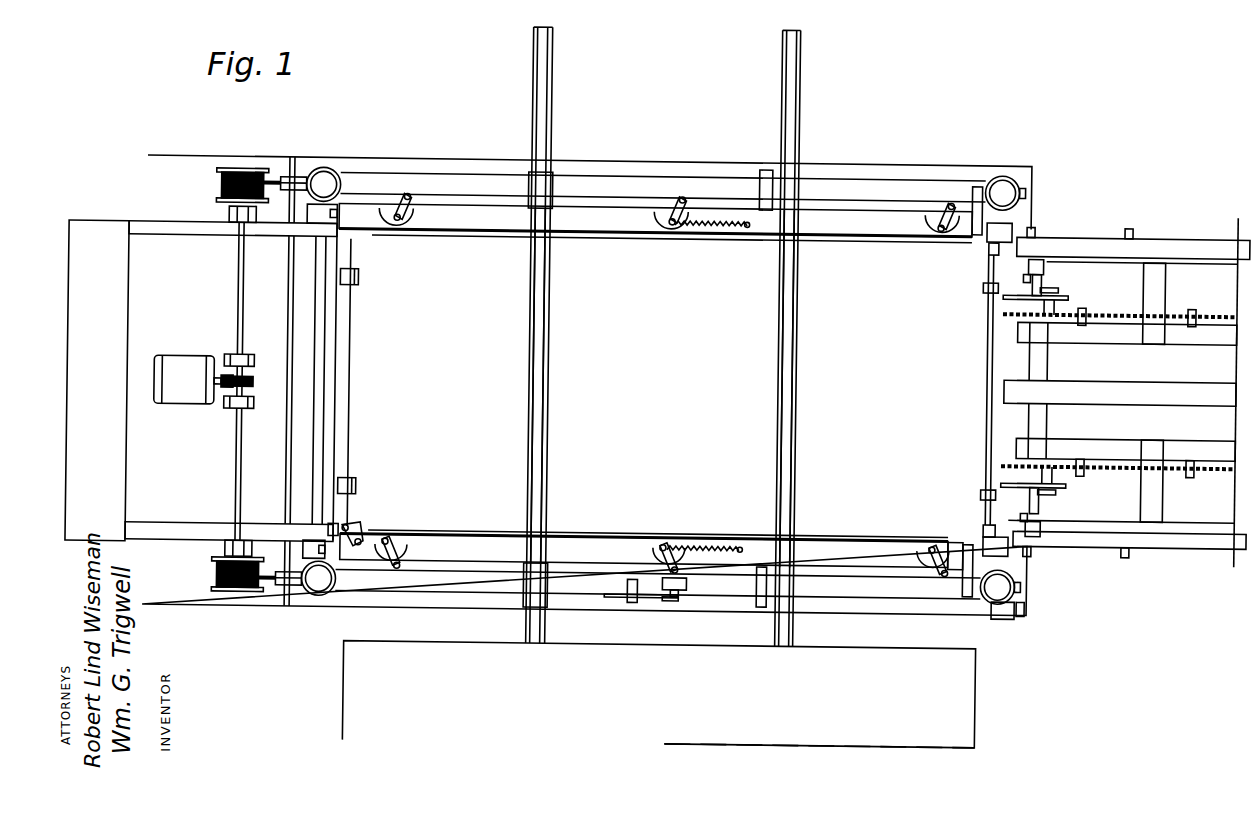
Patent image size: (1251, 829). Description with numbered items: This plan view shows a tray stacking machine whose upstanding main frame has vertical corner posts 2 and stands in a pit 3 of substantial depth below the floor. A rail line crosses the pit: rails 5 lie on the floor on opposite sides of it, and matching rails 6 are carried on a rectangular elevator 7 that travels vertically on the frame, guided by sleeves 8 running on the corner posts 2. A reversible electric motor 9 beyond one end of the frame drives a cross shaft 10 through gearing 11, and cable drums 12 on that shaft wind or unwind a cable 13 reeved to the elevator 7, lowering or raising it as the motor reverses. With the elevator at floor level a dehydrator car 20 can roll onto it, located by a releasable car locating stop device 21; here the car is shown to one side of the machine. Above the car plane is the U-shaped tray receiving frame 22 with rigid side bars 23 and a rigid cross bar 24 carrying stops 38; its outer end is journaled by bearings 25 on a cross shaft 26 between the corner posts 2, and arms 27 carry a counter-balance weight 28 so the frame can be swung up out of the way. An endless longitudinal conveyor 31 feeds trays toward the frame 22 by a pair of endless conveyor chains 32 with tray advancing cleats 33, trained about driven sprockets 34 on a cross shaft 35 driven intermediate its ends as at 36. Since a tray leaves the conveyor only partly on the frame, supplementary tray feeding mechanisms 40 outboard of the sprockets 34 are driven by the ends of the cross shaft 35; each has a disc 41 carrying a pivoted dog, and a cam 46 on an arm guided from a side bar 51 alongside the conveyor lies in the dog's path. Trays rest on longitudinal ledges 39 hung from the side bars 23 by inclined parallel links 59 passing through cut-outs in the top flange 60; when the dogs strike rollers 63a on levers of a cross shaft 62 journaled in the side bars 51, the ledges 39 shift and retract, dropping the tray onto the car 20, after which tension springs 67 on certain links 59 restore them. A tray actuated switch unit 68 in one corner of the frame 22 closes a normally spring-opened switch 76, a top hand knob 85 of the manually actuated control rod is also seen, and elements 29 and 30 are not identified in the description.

The vertical corner posts 2 is at (325, 178).
The pit 3 is at (826, 262).
The rails 5 is at (550, 108).
The rails 6 is at (550, 385).
The rectangular elevator 7 is at (450, 590).
The sleeves 8 is at (1006, 192).
The reversible electric motor 9 is at (178, 353).
The cross shaft 10 is at (238, 452).
The gearing 11 is at (243, 362).
The cable drums 12 is at (237, 167).
The cable 13 is at (270, 176).
The dehydrator car 20 is at (355, 686).
The car locating stop device 21 is at (660, 603).
The tray receiving frame 22 is at (622, 196).
The rigid side bars 23 is at (480, 234).
The rigid cross bar 24 is at (346, 344).
The bearings 25 is at (315, 208).
The cross shaft 26 is at (330, 394).
The arms 27 is at (190, 236).
The counter-balance weight 28 is at (97, 245).
The support bar 29 is at (975, 212).
The mounting block 30 is at (980, 182).
The endless longitudinal conveyor 31 is at (1122, 462).
The endless conveyor chains 32 is at (1116, 312).
The tray advancing cleats 33 is at (1196, 304).
The driven sprockets 34 is at (1058, 298).
The cross shaft 35 is at (1051, 360).
The cross shaft drive 36 is at (1145, 384).
The stops 38 is at (361, 274).
The longitudinal ledges 39 is at (712, 238).
The supplementary tray feeding mechanisms 40 is at (1075, 290).
The disc 41 is at (1015, 300).
The cam 46 is at (1034, 262).
The side bar 51 is at (1172, 246).
The parallel links 59 is at (398, 200).
The top flange 60 is at (598, 214).
The cross shaft 62 is at (989, 330).
The outer end rollers 63a is at (985, 290).
The tension springs 67 is at (734, 237).
The tray actuated switch unit 68 is at (352, 521).
The spring-opened switch 76 is at (334, 520).
The top hand knob 85 is at (1030, 614).